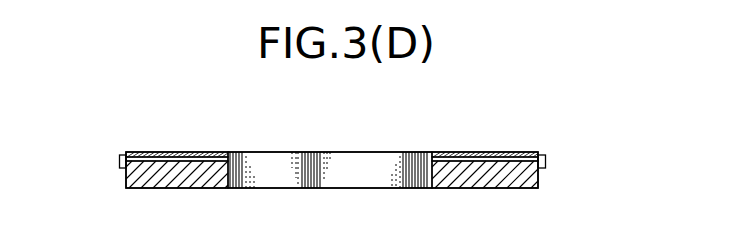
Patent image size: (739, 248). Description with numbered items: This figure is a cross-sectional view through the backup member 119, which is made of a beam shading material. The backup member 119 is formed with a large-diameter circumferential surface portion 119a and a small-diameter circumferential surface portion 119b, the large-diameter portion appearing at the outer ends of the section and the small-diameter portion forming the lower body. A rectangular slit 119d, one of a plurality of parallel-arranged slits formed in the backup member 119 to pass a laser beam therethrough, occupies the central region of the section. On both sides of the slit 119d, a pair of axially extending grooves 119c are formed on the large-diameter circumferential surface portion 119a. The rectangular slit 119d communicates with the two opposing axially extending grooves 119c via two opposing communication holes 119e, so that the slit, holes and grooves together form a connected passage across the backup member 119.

The backup member 119 is at (540, 173).
The large-diameter circumferential surface portion 119a is at (119, 161).
The small-diameter circumferential surface portion 119b is at (126, 189).
The axially extending grooves 119c is at (126, 152).
The rectangular slits 119d is at (383, 162).
The communication holes 119e is at (188, 156).